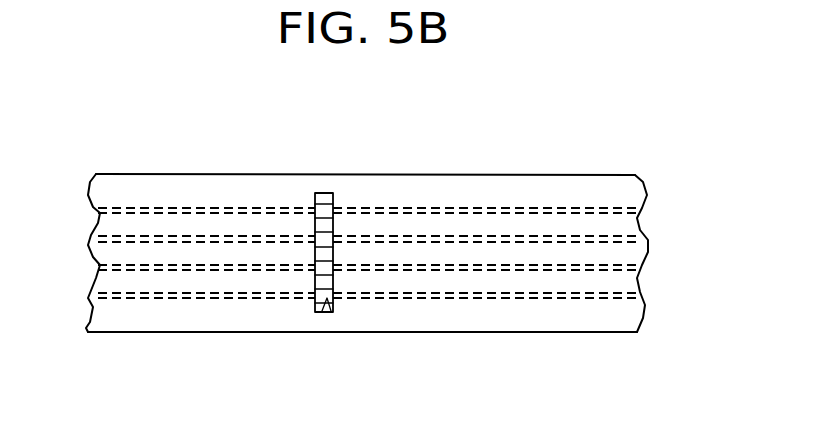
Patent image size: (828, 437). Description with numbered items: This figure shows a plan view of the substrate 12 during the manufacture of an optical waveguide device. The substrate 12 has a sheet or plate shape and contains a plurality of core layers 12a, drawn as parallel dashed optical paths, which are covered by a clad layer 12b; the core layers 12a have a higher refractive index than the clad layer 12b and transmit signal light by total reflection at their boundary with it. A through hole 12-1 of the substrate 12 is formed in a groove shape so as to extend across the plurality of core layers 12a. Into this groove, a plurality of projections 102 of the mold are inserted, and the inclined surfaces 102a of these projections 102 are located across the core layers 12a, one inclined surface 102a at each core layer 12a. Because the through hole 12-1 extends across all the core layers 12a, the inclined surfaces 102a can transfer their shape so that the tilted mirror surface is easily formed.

The substrate 12 is at (200, 173).
The core layers 12a is at (432, 208).
The clad layer 12b is at (420, 188).
The through hole 12-1 is at (327, 298).
The projection 102 is at (317, 210).
The inclined surface 102a is at (335, 232).